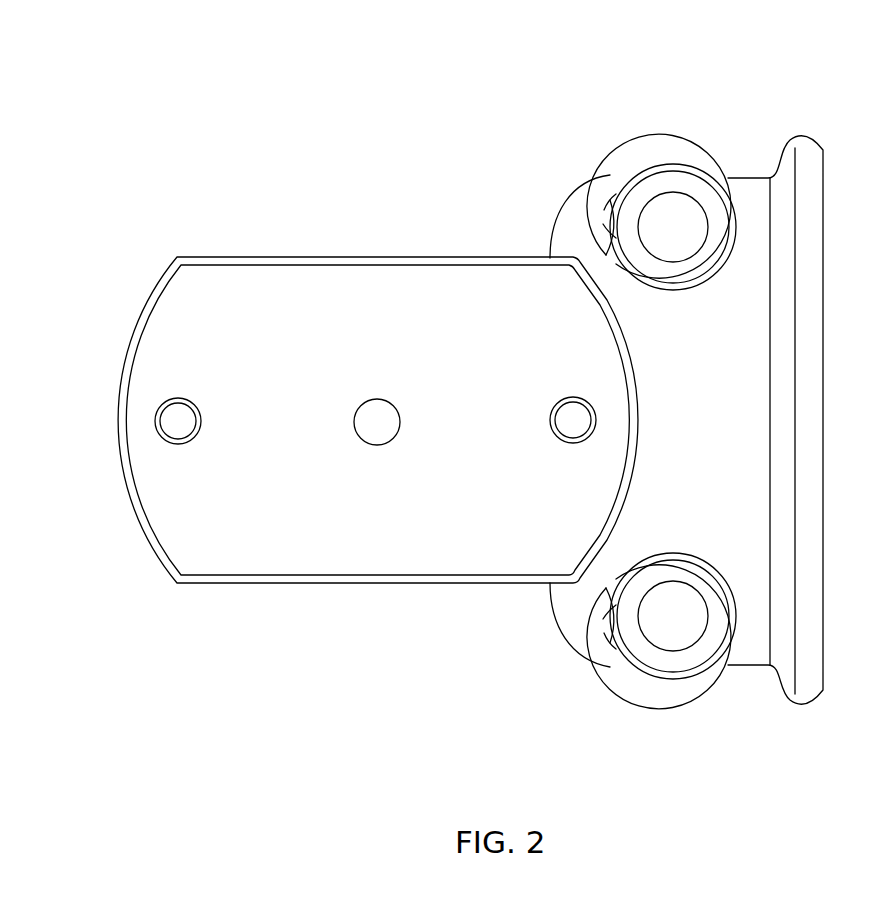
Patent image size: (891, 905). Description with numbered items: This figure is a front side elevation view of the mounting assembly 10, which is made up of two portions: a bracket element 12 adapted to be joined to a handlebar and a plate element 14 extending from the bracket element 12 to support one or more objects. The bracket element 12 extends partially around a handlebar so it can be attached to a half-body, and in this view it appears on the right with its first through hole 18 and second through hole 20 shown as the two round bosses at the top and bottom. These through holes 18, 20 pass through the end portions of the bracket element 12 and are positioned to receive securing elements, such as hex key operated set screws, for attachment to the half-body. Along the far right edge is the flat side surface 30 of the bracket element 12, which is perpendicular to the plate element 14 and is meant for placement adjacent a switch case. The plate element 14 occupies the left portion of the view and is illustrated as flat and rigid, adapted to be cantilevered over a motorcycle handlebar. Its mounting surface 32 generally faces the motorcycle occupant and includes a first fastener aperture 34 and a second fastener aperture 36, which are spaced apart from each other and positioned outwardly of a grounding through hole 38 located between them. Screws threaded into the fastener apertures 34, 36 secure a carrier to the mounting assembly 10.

The mounting assembly 10 is at (333, 82).
The bracket element 12 is at (825, 108).
The plate element 14 is at (622, 692).
The first through hole 18 is at (647, 207).
The second through hole 20 is at (683, 652).
The flat side surface 30 is at (822, 432).
The mounting surface 32 is at (378, 420).
The first fastener aperture 34 is at (194, 402).
The second fastener aperture 36 is at (562, 398).
The grounding through hole 38 is at (377, 399).